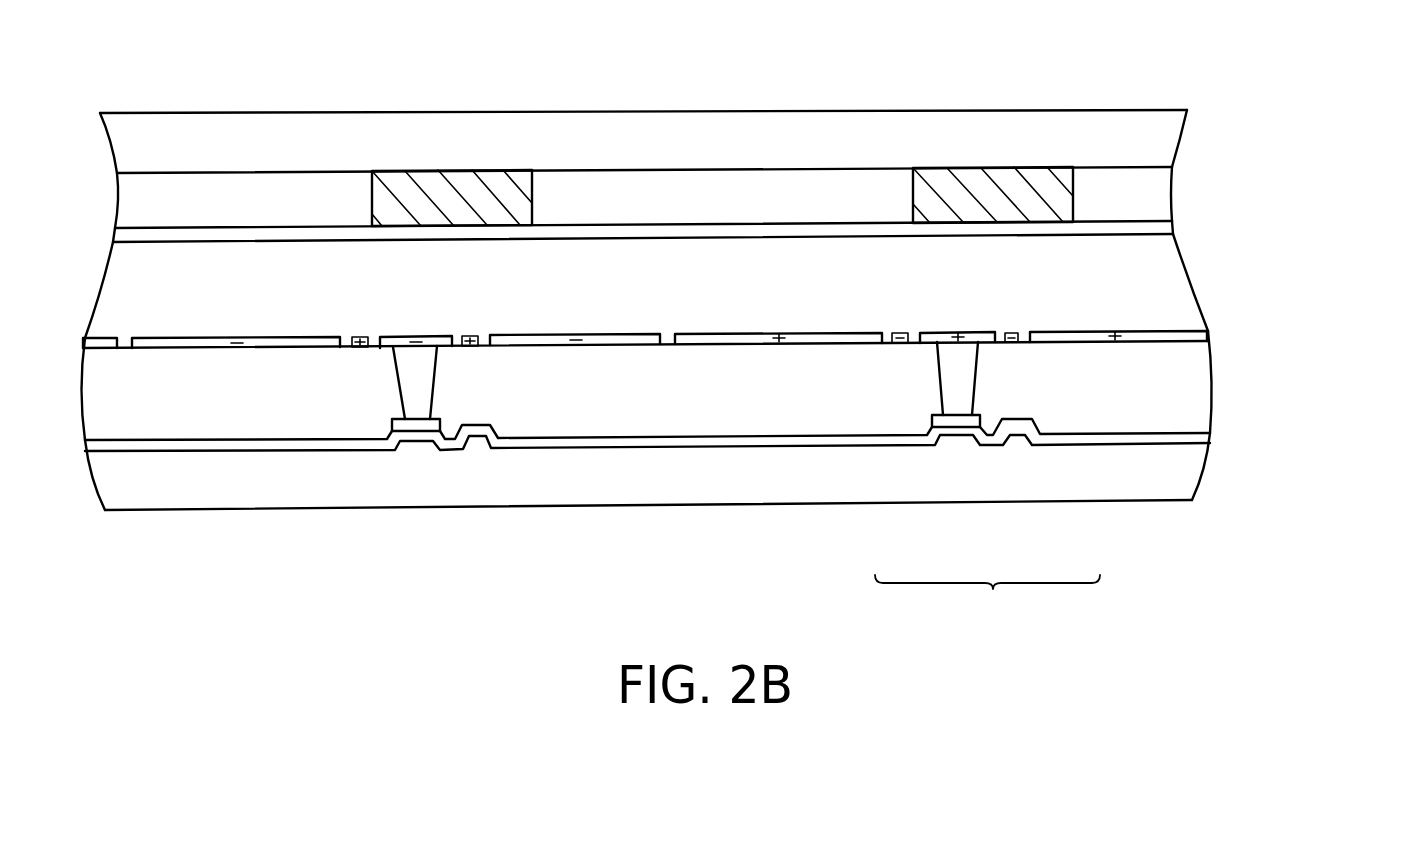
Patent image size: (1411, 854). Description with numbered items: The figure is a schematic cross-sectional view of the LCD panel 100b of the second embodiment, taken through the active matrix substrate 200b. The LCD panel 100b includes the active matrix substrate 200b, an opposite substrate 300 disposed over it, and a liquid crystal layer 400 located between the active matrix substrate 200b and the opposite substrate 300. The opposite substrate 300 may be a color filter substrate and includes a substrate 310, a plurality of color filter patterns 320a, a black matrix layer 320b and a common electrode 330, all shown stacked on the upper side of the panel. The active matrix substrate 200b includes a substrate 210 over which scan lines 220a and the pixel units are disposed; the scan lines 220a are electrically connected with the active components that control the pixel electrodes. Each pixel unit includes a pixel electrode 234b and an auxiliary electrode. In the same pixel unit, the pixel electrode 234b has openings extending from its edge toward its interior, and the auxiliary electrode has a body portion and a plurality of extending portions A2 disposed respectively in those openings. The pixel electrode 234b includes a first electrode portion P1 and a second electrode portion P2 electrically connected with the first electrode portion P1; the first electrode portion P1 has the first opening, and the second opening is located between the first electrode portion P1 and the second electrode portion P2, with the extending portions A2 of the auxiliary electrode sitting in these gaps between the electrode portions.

The LCD panel 100b is at (1303, 646).
The opposite substrate 300 is at (1238, 150).
The substrate 310 is at (688, 158).
The color filter patterns 320a is at (292, 216).
The black matrix layer 320b is at (475, 195).
The common electrode 330 is at (1160, 228).
The liquid crystal layer 400 is at (1153, 290).
The active matrix substrate 200b is at (1238, 390).
The substrate 210 is at (1160, 473).
The scan lines 220a is at (480, 441).
The first electrode portion P1 is at (870, 340).
The second electrode portion P2 is at (1085, 340).
The extending portions A2 is at (900, 333).
The pixel electrode 234b is at (987, 602).